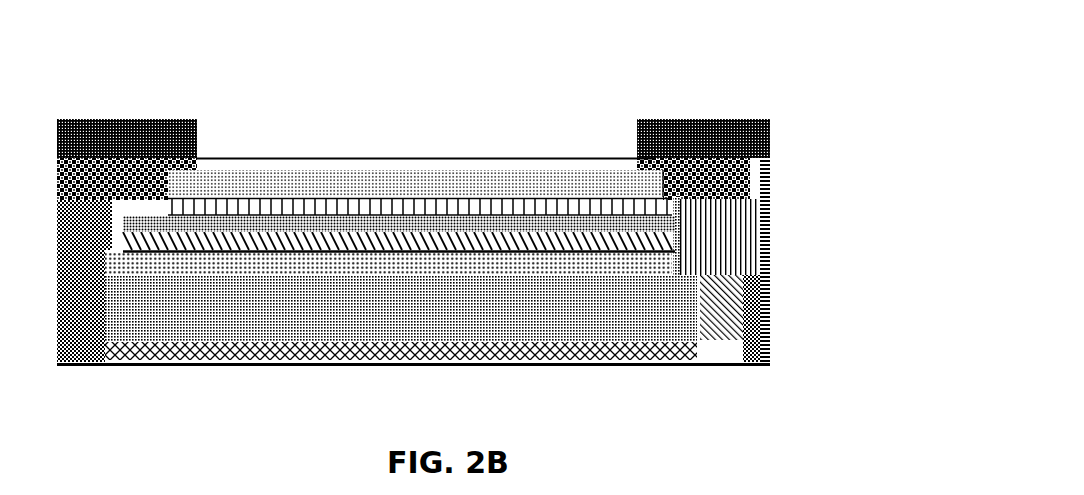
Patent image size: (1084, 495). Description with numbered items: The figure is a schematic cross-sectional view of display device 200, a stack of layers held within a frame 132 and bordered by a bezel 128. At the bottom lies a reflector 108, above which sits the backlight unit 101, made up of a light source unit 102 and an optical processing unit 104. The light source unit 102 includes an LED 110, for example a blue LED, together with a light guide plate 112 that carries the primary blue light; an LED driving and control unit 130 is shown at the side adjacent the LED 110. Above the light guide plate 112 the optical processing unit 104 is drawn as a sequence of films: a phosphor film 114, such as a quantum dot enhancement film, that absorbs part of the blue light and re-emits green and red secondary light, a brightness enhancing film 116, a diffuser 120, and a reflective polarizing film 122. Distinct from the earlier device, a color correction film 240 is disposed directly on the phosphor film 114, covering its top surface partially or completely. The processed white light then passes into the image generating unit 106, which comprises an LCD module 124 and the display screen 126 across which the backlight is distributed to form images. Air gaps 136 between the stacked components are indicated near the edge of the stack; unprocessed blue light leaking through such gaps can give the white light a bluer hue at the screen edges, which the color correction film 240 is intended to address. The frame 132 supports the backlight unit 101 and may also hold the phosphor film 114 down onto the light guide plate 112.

The display device 200 is at (503, 225).
The backlight unit 101 is at (527, 293).
The light source unit 102 is at (501, 295).
The optical processing unit 104 is at (504, 260).
The image generating unit 106 is at (415, 128).
The reflector 108 is at (632, 360).
The LED 110 is at (742, 320).
The light guide plate 112 is at (673, 333).
The phosphor film 114 is at (690, 261).
The brightness enhancing film 116 is at (674, 243).
The diffuser 120 is at (684, 222).
The reflective polarizing film 122 is at (680, 205).
The LCD module 124 is at (321, 180).
The display screen 126 is at (368, 100).
The bezel 128 is at (768, 128).
The LED driving and control unit 130 is at (690, 273).
The frame 132 is at (83, 352).
The air gaps 136 is at (672, 207).
The color correction film 240 is at (500, 253).